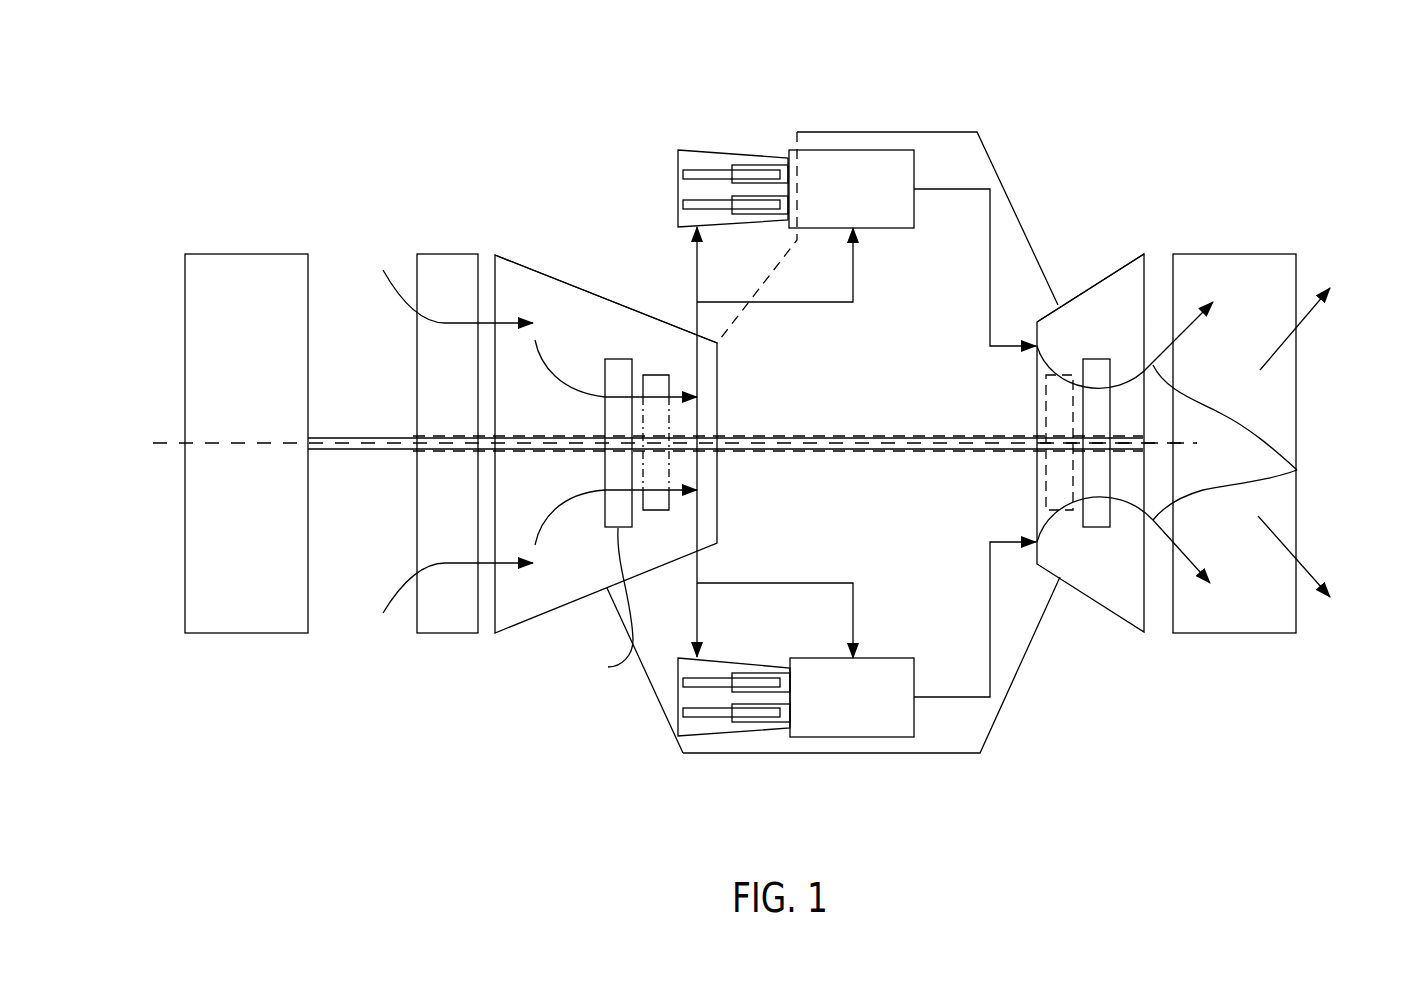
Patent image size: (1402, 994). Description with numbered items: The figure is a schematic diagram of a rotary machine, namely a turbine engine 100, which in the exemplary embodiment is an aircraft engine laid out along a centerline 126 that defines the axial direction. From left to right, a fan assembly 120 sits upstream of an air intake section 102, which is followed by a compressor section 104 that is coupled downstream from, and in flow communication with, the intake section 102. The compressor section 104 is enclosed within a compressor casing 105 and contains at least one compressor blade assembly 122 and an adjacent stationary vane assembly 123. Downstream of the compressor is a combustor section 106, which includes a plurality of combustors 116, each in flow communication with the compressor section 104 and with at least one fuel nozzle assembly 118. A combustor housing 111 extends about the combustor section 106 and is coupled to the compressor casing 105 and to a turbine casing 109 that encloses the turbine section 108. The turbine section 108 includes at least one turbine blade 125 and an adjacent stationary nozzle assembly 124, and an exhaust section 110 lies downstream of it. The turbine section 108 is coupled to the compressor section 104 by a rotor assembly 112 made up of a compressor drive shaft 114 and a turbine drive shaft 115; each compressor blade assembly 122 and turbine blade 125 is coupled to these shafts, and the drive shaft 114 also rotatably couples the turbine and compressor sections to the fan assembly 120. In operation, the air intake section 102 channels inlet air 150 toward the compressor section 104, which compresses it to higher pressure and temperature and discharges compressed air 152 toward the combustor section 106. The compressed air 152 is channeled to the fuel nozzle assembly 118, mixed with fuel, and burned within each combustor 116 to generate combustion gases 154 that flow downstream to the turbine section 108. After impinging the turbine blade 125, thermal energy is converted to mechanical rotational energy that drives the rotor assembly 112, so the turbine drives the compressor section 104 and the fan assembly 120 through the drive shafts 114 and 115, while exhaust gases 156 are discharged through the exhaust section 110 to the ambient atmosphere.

The turbine engine 100 is at (208, 73).
The air intake section 102 is at (447, 254).
The compressor section 104 is at (508, 240).
The compressor casing 105 is at (575, 287).
The combustor section 106 is at (1032, 168).
The turbine section 108 is at (1122, 250).
The turbine casing 109 is at (1092, 283).
The exhaust section 110 is at (1237, 254).
The combustor housing 111 is at (928, 132).
The rotor assembly 112 is at (805, 425).
The compressor drive shaft 114 is at (532, 443).
The turbine drive shaft 115 is at (1115, 448).
The combustor 116 is at (847, 150).
The fuel nozzle assembly 118 is at (708, 155).
The fan assembly 120 is at (247, 254).
The compressor blade assembly 122 is at (655, 510).
The stationary vane assembly 123 is at (627, 556).
The stationary nozzle assembly 124 is at (1063, 510).
The turbine blade 125 is at (1098, 528).
The centerline 126 is at (161, 443).
The inlet air 150 is at (396, 298).
The compressed air 152 is at (545, 365).
The combustion gases 154 is at (1297, 470).
The exhaust gases 156 is at (1297, 320).